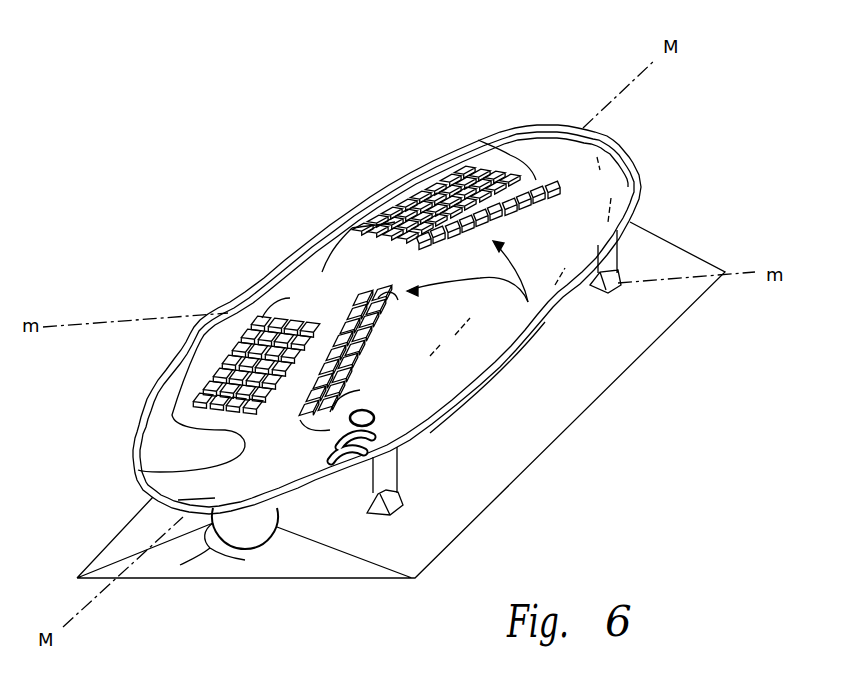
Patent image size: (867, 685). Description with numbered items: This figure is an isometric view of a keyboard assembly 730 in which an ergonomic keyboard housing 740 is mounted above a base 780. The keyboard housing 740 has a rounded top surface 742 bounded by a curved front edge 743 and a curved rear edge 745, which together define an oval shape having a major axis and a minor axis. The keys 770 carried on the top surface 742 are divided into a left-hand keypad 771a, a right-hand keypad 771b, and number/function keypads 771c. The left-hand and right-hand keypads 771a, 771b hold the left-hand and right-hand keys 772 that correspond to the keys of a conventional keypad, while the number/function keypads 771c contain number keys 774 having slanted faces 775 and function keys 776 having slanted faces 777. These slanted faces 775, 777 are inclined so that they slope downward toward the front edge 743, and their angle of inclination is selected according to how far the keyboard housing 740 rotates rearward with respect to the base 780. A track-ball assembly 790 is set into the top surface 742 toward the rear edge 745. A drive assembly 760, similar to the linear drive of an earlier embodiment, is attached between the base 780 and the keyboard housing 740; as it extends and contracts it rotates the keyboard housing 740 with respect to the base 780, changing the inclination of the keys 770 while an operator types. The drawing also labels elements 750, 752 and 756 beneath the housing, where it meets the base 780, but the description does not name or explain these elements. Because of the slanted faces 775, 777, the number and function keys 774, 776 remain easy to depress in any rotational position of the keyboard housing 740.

The keyboard assembly 730 is at (100, 268).
The keyboard housing 740 is at (620, 146).
The top surface 742 is at (572, 238).
The front edge 743 is at (143, 412).
The rear edge 745 is at (513, 360).
The base mount 750 is at (180, 565).
The support shaft 752 is at (240, 545).
The ball joint 756 is at (277, 537).
The drive assembly 760 is at (410, 490).
The keys 770 is at (245, 292).
The left-hand keypad 771a is at (510, 153).
The right-hand keypad 771b is at (135, 460).
The number/function keypads 771c is at (528, 302).
The left-hand and right-hand keys 772 is at (270, 318).
The number keys 774 is at (340, 365).
The slanted faces 775 is at (270, 413).
The function keys 776 is at (393, 307).
The slanted faces 777 is at (373, 297).
The base 780 is at (330, 575).
The track-ball assembly 790 is at (392, 418).